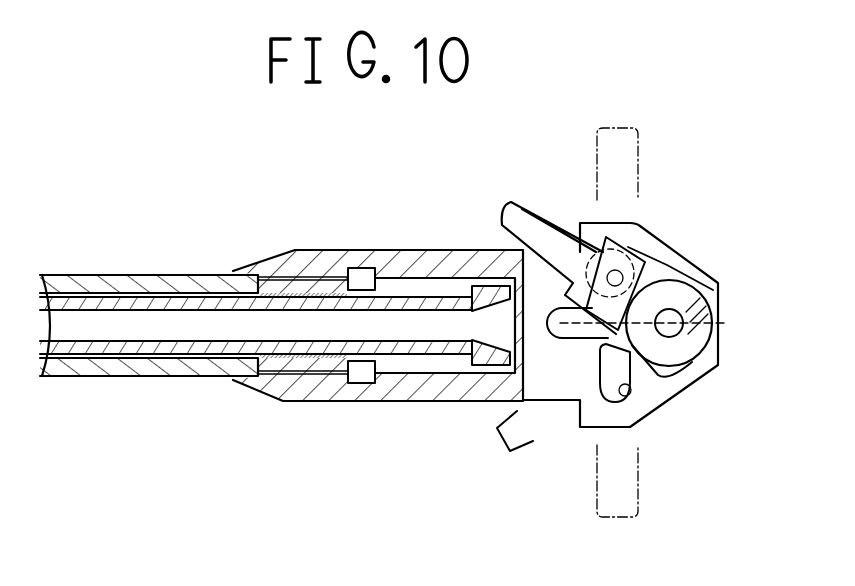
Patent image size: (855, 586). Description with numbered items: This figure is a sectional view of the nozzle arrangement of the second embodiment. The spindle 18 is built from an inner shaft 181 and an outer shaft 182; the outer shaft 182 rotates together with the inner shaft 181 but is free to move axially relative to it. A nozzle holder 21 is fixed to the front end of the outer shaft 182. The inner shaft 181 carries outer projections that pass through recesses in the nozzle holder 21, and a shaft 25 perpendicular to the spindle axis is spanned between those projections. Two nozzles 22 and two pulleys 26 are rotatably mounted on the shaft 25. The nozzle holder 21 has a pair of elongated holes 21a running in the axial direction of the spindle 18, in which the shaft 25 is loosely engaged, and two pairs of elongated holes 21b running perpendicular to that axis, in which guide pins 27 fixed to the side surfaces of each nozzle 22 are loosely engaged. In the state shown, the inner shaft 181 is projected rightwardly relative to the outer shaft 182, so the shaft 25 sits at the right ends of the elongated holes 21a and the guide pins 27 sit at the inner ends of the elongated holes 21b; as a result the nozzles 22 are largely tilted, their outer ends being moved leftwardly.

The spindle 18 is at (275, 389).
The inner shaft 181 is at (112, 352).
The outer shaft 182 is at (174, 356).
The nozzle holder 21 is at (622, 338).
The elongated holes 21a is at (572, 330).
The elongated holes 21b is at (622, 246).
The nozzle 22 is at (530, 200).
The shaft 25 is at (716, 316).
The pulley 26 is at (716, 350).
The guide pin 27 is at (652, 262).